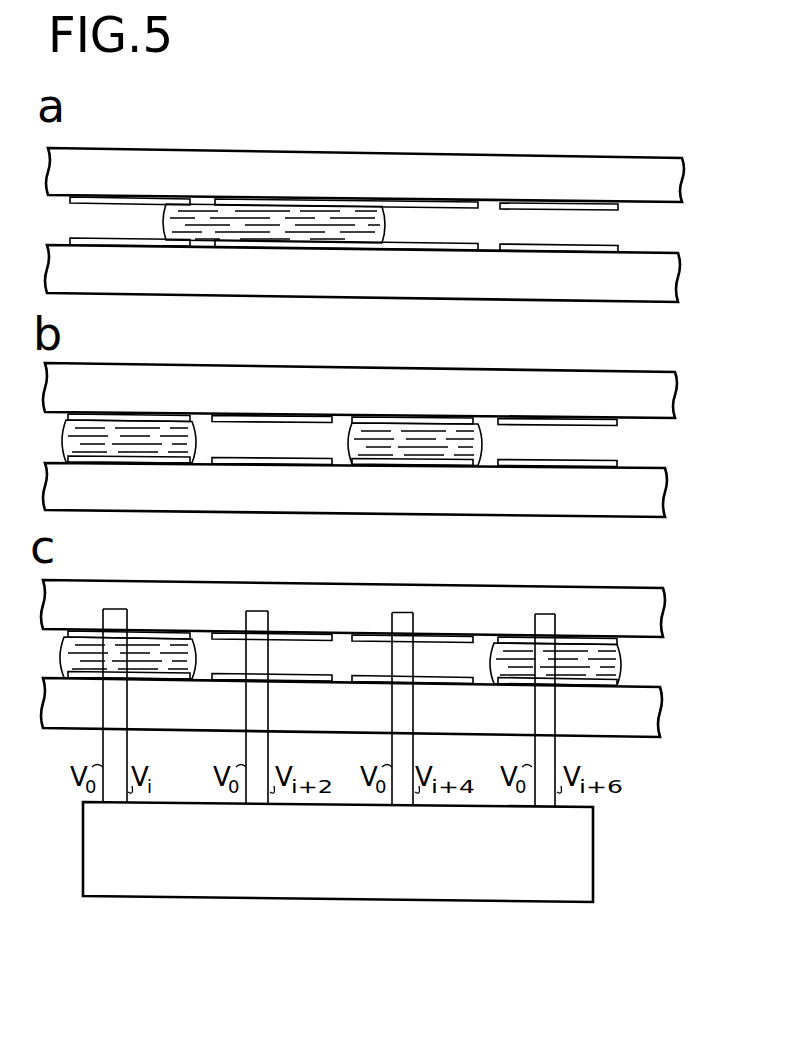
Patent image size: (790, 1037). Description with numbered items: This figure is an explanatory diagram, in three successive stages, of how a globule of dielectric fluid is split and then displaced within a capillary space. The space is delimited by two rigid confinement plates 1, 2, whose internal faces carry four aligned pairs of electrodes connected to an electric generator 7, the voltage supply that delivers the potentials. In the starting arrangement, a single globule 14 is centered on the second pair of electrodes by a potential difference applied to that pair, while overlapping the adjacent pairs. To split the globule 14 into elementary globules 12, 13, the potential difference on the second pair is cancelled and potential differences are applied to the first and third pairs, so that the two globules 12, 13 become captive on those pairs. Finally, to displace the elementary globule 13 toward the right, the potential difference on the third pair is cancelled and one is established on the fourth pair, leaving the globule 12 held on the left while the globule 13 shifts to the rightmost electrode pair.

The confinement plate 1 is at (622, 165).
The confinement plate 2 is at (635, 263).
The globule 14 is at (386, 229).
The globule 12 is at (186, 444).
The globule 13 is at (466, 449).
The electric generator 7 is at (594, 848).